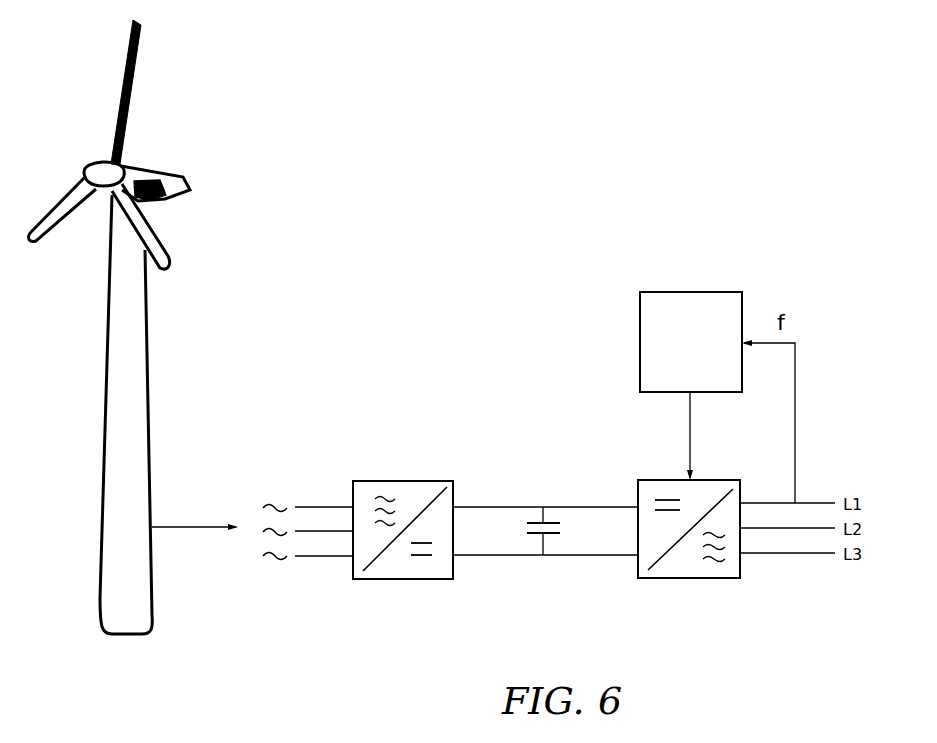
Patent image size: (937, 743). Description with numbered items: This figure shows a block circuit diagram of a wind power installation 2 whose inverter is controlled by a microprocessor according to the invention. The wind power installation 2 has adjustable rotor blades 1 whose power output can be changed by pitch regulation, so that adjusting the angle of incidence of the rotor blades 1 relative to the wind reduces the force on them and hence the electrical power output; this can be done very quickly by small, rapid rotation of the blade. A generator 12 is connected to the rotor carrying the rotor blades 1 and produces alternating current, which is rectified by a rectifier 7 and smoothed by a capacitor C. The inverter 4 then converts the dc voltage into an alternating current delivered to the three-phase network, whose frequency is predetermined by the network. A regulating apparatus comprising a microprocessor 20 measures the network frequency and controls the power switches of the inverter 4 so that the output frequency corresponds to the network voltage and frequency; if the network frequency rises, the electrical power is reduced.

The rotor blades 1 is at (132, 75).
The generator 12 is at (157, 167).
The wind power installation 2 is at (126, 400).
The rectifier 7 is at (393, 594).
The capacitor C is at (543, 566).
The inverter 4 is at (700, 588).
The microprocessor 20 is at (612, 329).